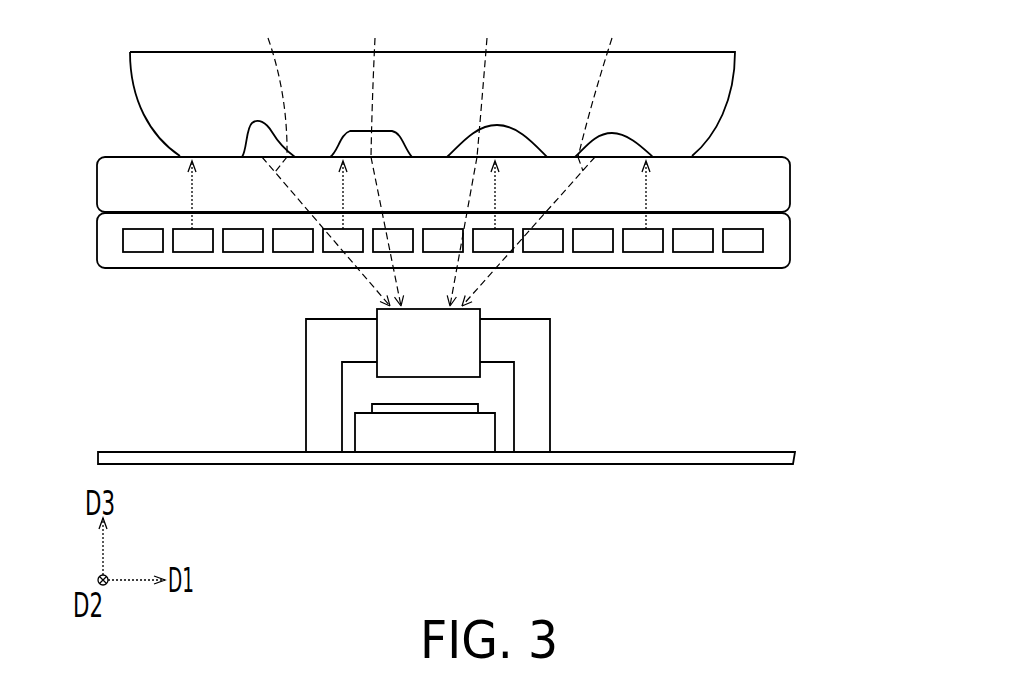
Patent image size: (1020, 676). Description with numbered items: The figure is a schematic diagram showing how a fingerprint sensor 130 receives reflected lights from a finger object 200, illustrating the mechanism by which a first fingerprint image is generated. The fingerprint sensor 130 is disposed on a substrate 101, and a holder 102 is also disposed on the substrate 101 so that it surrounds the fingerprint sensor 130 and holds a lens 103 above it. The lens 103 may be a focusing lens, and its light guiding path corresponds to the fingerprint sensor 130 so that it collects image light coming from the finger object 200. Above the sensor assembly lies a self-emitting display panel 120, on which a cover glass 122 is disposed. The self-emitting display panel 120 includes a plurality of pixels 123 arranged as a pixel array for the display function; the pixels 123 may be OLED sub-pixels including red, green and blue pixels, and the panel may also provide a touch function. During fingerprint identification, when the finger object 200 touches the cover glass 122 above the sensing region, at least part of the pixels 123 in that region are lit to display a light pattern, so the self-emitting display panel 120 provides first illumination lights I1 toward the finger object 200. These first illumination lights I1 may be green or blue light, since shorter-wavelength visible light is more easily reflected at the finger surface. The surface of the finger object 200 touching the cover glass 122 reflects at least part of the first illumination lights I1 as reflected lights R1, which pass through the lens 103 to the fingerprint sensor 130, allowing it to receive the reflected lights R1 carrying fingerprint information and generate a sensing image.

The finger object 200 is at (730, 72).
The cover glass 122 is at (787, 181).
The self-emitting display panel 120 is at (787, 226).
The pixels 123 is at (140, 252).
The lens 103 is at (467, 333).
The holder 102 is at (542, 385).
The fingerprint sensor 130 is at (478, 447).
The substrate 101 is at (795, 458).
The reflected lights R1 is at (441, 153).
The first illumination lights I1 is at (648, 191).